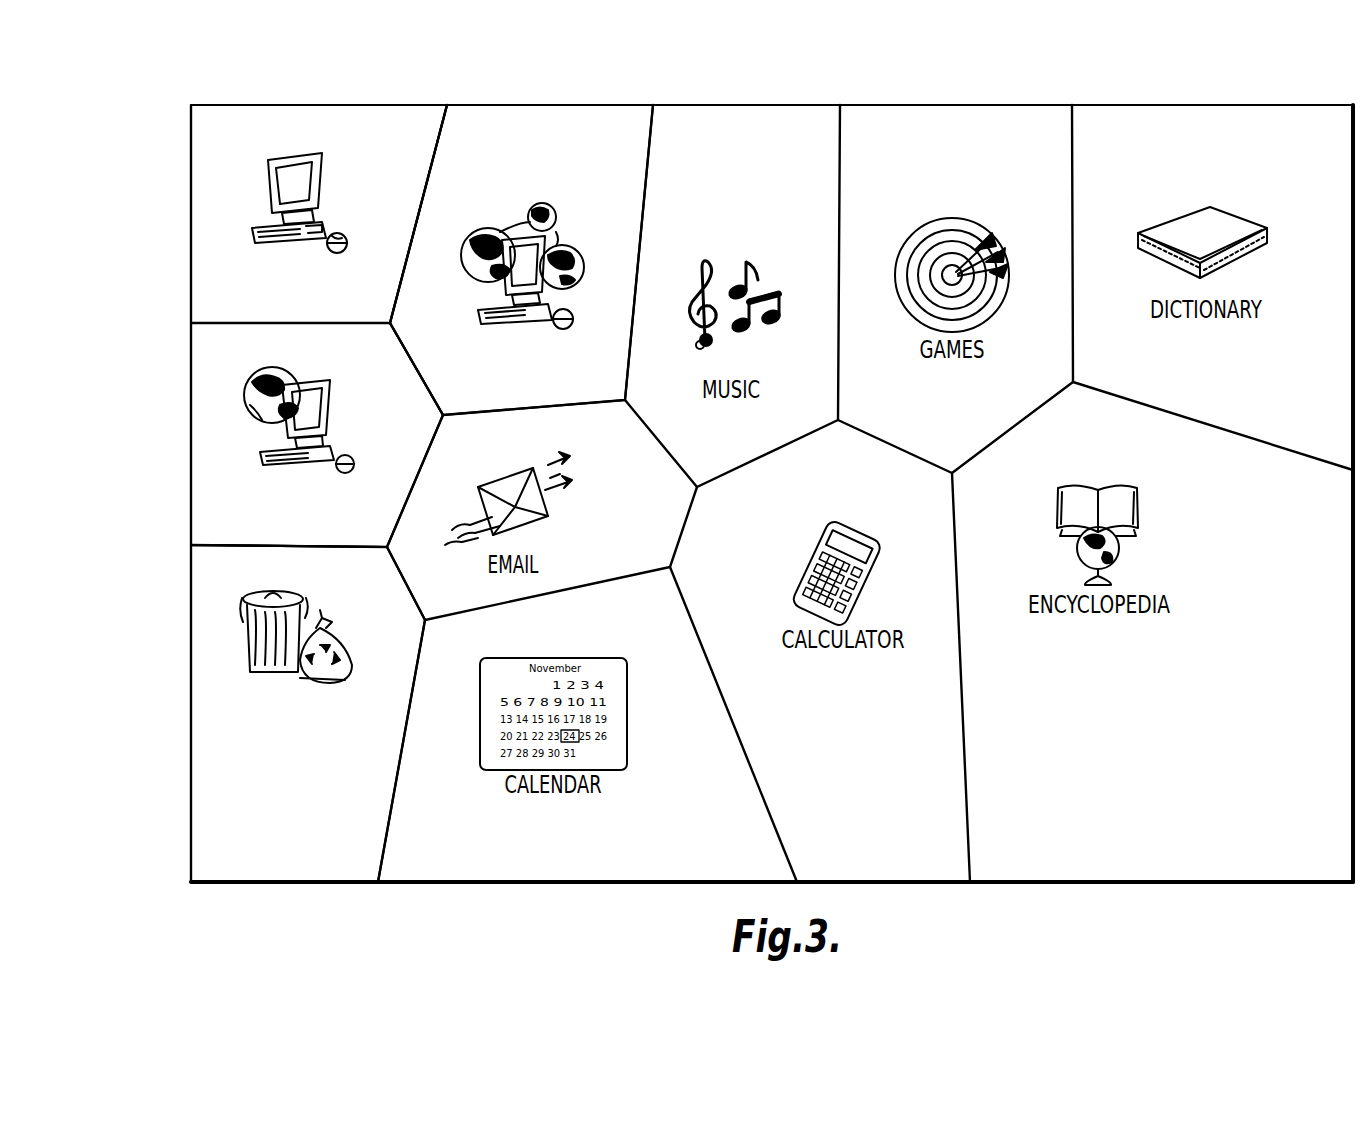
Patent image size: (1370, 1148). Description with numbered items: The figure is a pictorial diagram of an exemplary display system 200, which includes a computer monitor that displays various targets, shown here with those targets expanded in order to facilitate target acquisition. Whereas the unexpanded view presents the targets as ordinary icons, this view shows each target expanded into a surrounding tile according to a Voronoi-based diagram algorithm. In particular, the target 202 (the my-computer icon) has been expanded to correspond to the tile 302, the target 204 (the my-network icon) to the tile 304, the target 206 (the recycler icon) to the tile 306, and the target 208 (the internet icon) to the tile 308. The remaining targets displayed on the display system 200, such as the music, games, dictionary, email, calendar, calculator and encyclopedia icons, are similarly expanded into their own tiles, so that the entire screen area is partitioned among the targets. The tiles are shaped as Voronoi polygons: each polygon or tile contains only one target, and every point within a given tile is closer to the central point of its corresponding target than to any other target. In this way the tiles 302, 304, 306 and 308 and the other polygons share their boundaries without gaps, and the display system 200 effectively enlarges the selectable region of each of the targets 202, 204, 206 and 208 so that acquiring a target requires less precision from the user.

The display system 200 is at (1030, 105).
The target 202 is at (268, 197).
The target 204 is at (258, 422).
The target 206 is at (246, 632).
The target 208 is at (542, 204).
The tile 302 is at (207, 150).
The tile 304 is at (207, 372).
The tile 306 is at (207, 595).
The tile 308 is at (484, 130).